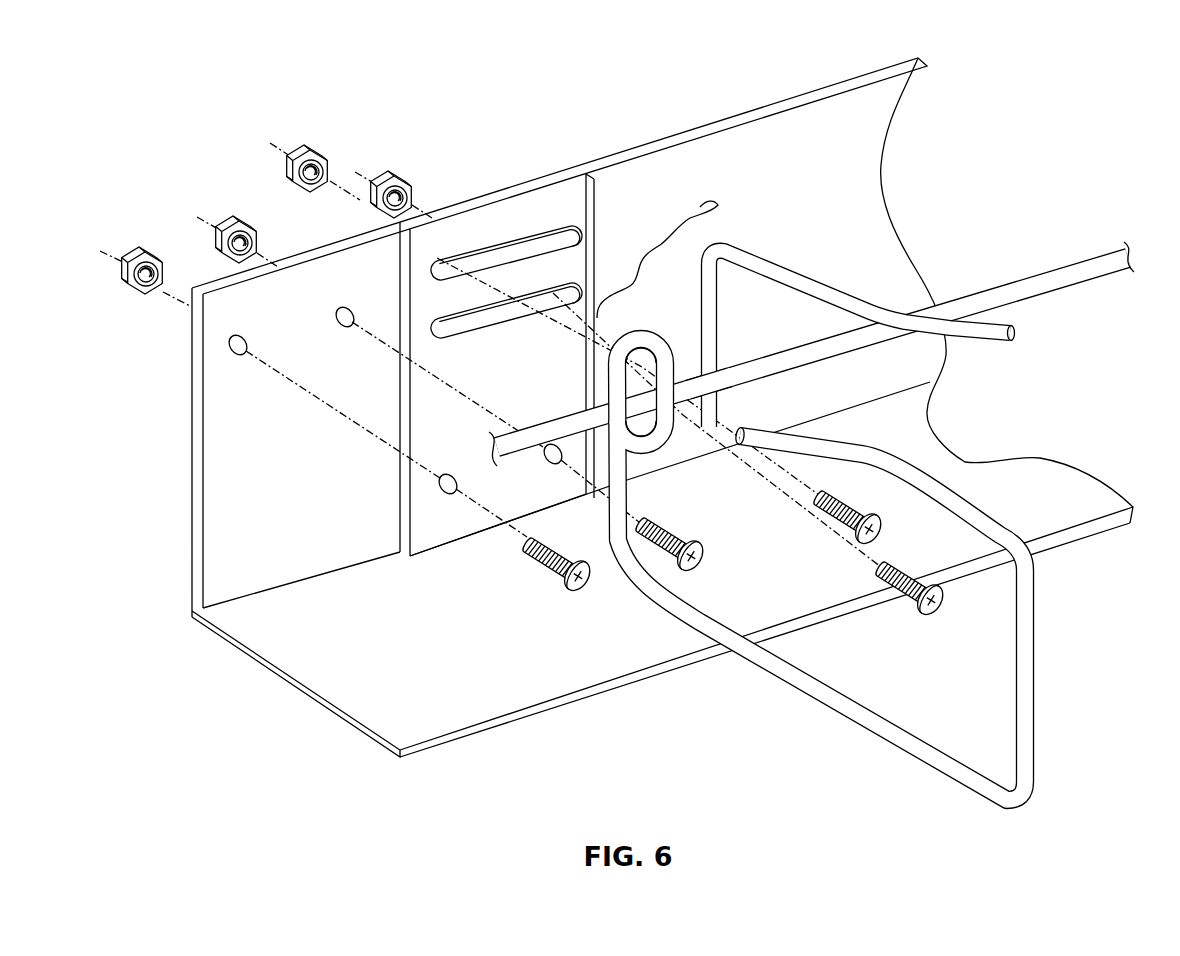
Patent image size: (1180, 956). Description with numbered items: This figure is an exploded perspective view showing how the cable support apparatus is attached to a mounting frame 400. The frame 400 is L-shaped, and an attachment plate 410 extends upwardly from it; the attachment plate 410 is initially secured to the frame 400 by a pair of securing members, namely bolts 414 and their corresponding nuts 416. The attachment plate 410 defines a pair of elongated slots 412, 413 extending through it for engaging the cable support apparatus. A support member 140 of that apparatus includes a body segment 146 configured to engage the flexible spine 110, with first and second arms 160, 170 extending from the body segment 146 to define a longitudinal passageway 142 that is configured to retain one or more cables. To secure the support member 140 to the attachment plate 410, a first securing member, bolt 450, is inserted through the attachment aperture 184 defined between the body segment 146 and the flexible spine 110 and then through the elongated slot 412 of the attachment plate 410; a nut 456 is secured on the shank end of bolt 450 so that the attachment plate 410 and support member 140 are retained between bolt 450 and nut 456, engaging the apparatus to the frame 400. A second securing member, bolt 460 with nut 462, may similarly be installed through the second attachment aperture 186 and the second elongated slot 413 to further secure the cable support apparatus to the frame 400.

The flexible spine 110 is at (1057, 287).
The support member 140 is at (851, 231).
The longitudinal passageway 142 is at (897, 674).
The body segment 146 is at (637, 257).
The first arm 160 is at (925, 757).
The second arm 170 is at (857, 302).
The attachment aperture 184 is at (643, 366).
The second attachment aperture 186 is at (688, 424).
The frame 400 is at (807, 153).
The attachment plate 410 is at (427, 425).
The elongated slot 412 is at (490, 256).
The second elongated slot 413 is at (551, 292).
The bolts 414 is at (577, 597).
The nuts 416 is at (239, 228).
The bolt 450 is at (953, 593).
The nut 456 is at (308, 154).
The bolt 460 is at (880, 523).
The nut 462 is at (393, 179).